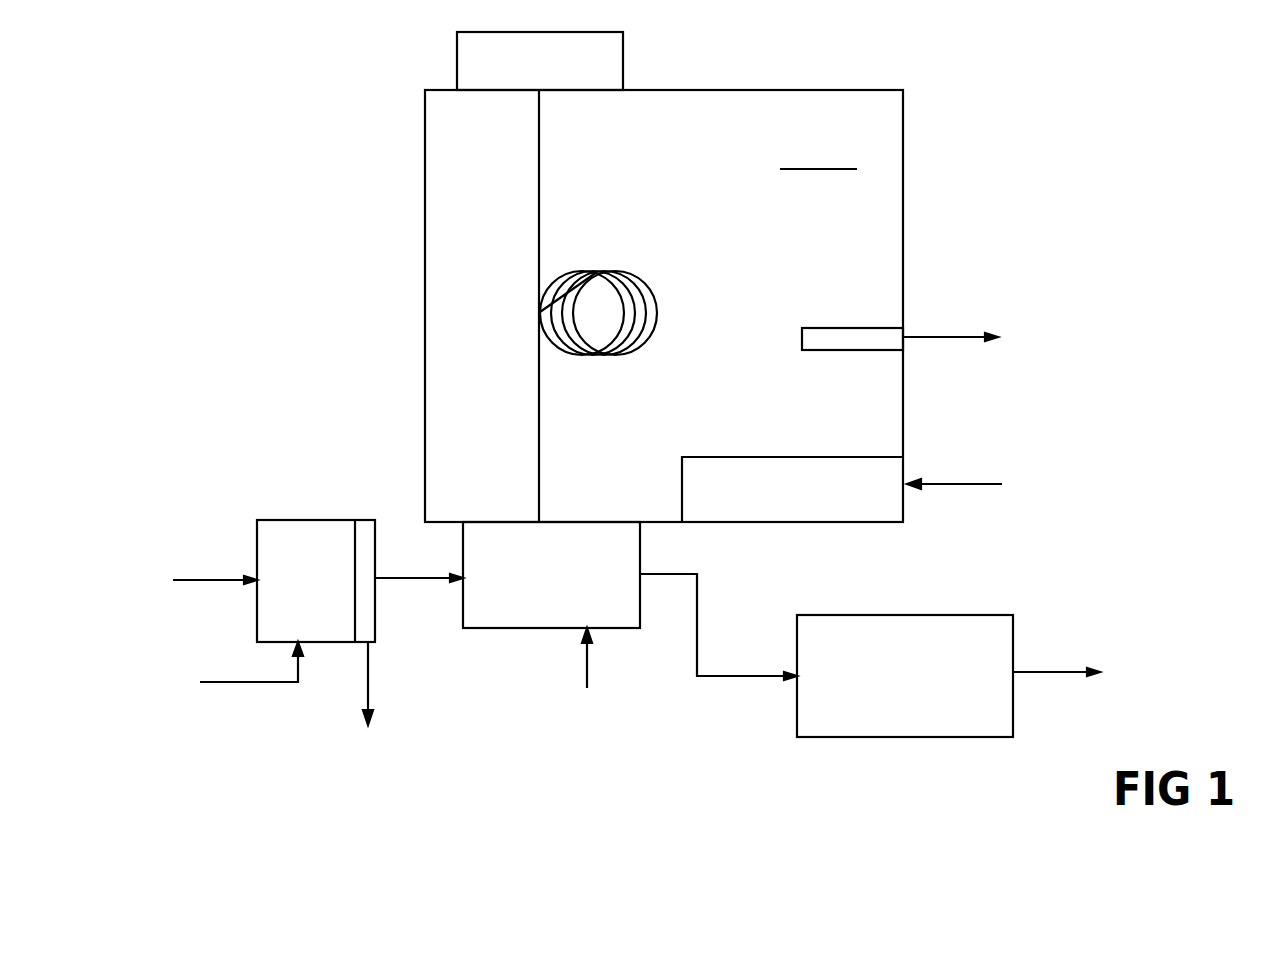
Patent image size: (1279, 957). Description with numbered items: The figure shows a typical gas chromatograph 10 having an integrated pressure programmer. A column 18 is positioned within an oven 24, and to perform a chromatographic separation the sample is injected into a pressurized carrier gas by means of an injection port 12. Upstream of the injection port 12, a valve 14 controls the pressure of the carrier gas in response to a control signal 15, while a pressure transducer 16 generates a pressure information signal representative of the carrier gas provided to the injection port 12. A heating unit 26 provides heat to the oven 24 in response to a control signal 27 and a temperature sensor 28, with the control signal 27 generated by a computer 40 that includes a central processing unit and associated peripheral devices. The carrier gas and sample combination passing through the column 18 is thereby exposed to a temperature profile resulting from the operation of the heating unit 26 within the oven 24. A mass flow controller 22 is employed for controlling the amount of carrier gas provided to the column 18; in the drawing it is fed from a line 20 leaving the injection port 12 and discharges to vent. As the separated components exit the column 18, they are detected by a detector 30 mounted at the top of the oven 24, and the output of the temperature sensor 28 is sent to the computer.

The gas chromatograph 10 is at (922, 98).
The injection port 12 is at (530, 622).
The valve 14 is at (280, 532).
The control signal 15 is at (171, 691).
The pressure transducer 16 is at (363, 532).
The column 18 is at (539, 462).
The line to mass flow controller 20 is at (695, 628).
The mass flow controller 22 is at (905, 715).
The oven 24 is at (711, 90).
The heating unit 26 is at (886, 455).
The control signal 27 is at (1091, 451).
The temperature sensor 28 is at (889, 326).
The detector 30 is at (457, 62).
The computer 40 is at (1114, 505).